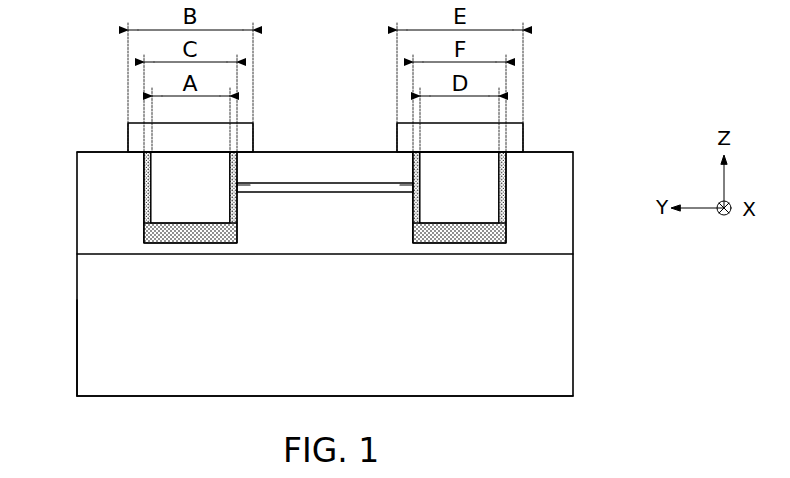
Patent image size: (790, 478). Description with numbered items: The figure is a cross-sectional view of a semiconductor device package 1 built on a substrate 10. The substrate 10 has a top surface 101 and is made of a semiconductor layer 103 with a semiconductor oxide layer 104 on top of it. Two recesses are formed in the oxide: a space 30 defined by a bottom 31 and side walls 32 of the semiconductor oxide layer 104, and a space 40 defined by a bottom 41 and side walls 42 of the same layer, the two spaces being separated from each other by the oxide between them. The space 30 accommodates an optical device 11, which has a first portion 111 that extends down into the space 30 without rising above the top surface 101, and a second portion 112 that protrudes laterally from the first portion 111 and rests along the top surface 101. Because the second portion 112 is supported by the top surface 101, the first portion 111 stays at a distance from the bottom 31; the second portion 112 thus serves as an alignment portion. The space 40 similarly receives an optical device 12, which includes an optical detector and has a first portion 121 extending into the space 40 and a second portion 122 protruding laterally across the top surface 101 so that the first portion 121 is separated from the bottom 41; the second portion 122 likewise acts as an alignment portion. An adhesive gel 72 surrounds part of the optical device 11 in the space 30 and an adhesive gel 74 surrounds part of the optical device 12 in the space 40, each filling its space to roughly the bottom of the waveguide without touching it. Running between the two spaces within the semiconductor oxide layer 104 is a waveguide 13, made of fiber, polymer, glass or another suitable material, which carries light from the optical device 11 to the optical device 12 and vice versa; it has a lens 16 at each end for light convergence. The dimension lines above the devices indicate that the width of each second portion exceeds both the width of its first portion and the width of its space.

The semiconductor device package 1 is at (642, 118).
The substrate 10 is at (386, 274).
The top surface 101 is at (103, 152).
The semiconductor layer 103 is at (563, 292).
The semiconductor oxide layer 104 is at (563, 237).
The optical device 11 is at (254, 122).
The first portion 111 is at (223, 170).
The second portion 112 is at (247, 132).
The optical device 12 is at (516, 104).
The first portion 121 is at (505, 165).
The second portion 122 is at (518, 133).
The waveguide 13 is at (323, 187).
The lens 16 is at (407, 185).
The space 30 is at (131, 198).
The bottom 31 is at (152, 232).
The side walls 32 is at (151, 183).
The space 40 is at (523, 169).
The bottom 41 is at (490, 242).
The side walls 42 is at (483, 170).
The adhesive gel 72 is at (190, 238).
The adhesive gel 74 is at (462, 236).